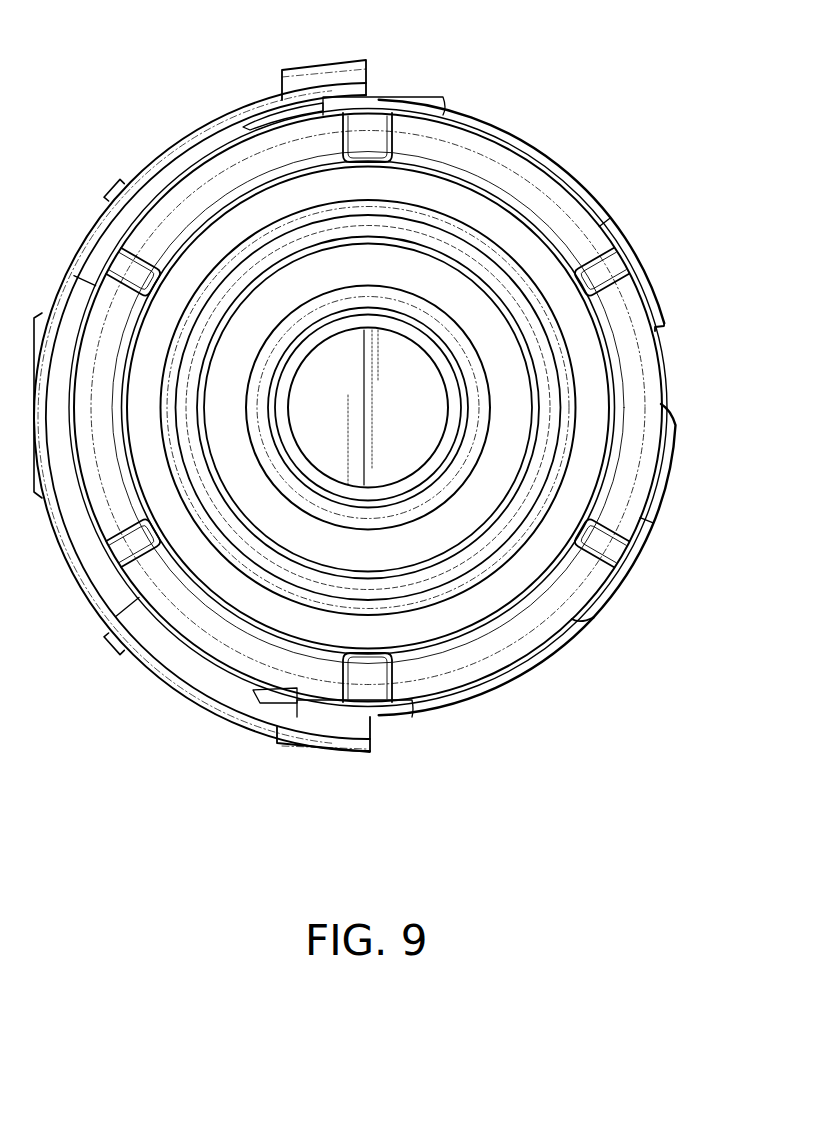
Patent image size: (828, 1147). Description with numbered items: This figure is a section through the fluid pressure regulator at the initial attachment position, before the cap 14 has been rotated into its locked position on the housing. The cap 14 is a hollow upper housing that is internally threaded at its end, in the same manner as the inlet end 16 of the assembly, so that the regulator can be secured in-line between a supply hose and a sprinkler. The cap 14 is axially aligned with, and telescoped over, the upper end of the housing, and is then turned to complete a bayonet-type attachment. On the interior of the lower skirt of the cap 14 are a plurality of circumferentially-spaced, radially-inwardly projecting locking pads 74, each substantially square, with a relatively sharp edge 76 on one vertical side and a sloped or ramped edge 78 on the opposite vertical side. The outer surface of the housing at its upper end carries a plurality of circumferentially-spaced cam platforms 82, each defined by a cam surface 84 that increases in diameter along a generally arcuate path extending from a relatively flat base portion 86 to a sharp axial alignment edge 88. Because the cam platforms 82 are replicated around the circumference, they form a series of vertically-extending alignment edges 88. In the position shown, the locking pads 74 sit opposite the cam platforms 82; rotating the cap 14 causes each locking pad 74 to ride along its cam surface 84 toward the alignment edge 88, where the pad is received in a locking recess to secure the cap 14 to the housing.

The cap 14 is at (193, 700).
The inlet end 16 is at (552, 645).
The locking pads 74 is at (207, 143).
The sharp edge 76 is at (137, 200).
The ramped edge 78 is at (306, 120).
The cam platforms 82 is at (647, 247).
The cam surface 84 is at (598, 190).
The base portion 86 is at (487, 128).
The alignment edge 88 is at (668, 320).